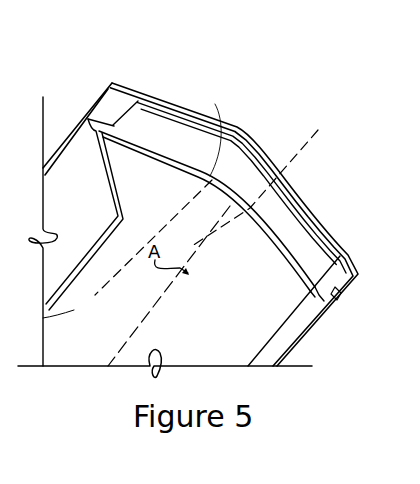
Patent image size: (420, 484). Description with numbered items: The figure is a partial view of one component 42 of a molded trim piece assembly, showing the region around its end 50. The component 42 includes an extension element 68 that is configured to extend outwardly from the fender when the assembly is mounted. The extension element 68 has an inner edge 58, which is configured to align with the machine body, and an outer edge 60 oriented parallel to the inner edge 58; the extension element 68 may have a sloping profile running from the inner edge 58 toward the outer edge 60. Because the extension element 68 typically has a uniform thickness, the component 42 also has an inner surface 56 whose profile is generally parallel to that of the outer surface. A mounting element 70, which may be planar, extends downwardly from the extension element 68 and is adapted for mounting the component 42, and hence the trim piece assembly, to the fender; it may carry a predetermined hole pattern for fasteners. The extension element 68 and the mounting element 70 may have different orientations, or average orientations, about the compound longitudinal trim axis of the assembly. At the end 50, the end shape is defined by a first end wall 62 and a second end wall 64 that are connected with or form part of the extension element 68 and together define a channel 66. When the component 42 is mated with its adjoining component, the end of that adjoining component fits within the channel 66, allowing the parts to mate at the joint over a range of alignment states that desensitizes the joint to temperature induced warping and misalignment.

The component 42 is at (199, 348).
The end 50 is at (350, 243).
The inner surface 56 is at (247, 321).
The inner edge 58 is at (90, 99).
The outer edge 60 is at (0, 25).
The first end wall 62 is at (173, 96).
The second end wall 64 is at (153, 104).
The channel 66 is at (318, 291).
The extension element 68 is at (234, 130).
The mounting element 70 is at (67, 281).